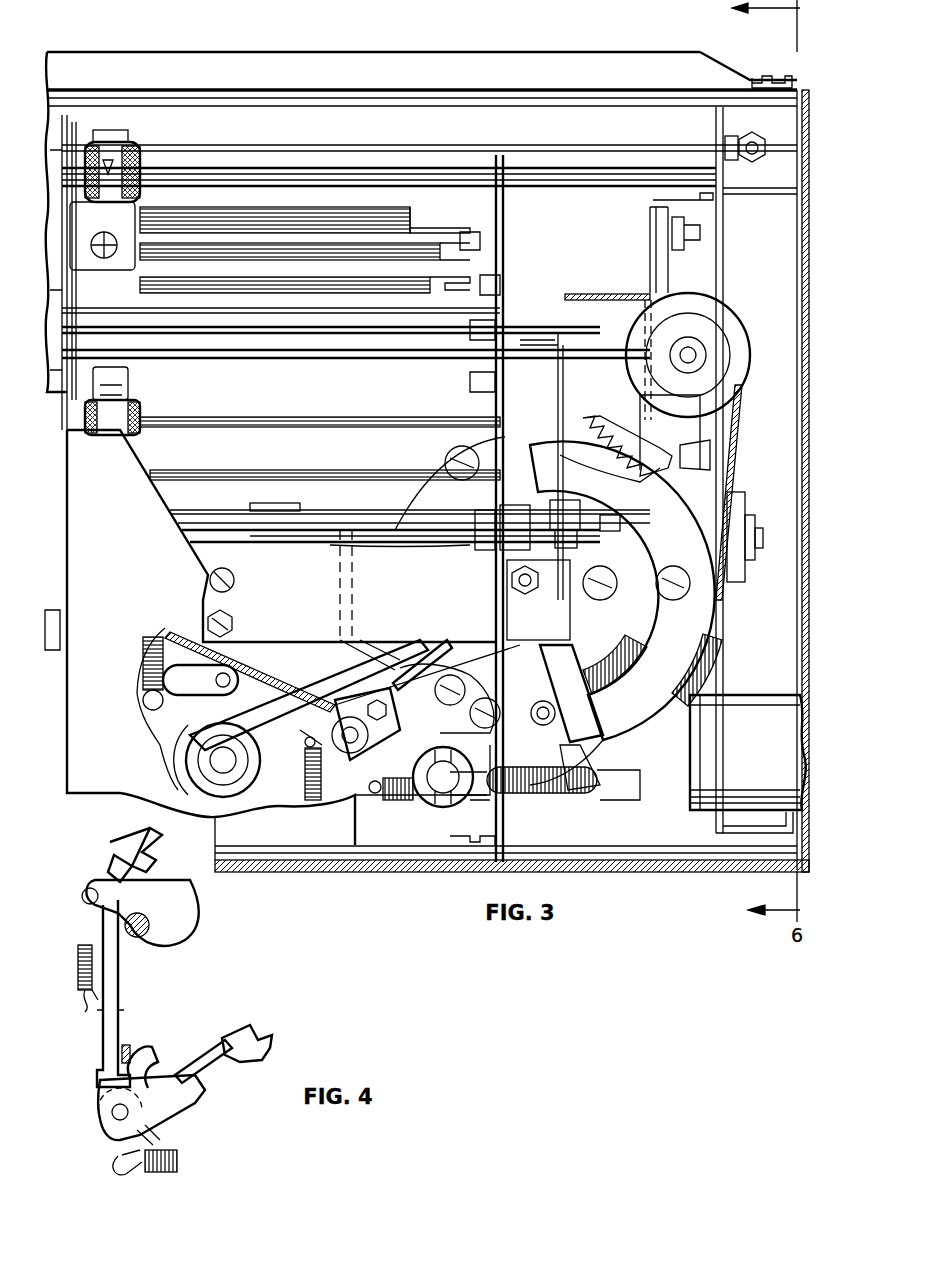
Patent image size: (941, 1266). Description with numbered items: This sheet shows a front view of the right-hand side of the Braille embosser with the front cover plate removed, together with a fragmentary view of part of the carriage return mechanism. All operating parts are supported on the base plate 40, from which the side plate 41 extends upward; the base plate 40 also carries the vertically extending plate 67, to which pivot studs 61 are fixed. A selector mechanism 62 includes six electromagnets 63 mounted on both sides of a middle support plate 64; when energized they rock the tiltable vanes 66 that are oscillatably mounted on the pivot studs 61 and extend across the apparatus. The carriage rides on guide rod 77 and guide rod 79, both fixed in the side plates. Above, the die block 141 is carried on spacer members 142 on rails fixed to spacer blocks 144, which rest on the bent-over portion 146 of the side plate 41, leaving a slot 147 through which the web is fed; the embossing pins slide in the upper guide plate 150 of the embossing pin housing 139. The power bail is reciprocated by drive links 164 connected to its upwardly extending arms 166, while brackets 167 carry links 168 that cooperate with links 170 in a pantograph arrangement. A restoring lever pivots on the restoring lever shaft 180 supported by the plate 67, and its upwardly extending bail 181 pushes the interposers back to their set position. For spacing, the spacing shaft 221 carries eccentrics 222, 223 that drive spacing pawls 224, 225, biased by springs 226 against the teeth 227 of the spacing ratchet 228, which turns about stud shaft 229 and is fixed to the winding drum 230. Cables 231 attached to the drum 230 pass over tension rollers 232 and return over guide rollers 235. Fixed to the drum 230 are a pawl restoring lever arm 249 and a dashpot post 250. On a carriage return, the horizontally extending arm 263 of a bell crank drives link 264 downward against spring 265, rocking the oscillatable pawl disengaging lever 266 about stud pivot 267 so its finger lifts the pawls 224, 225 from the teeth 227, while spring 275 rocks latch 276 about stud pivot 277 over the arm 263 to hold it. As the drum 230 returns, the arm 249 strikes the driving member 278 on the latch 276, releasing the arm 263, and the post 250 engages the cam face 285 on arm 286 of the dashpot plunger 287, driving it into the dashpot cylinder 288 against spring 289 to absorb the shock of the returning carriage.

In FIG. 3, the base plate 40 is at (445, 846).
In FIG. 3, the side plate 41 is at (726, 657).
In FIG. 3, the pivot studs 61 is at (466, 246).
In FIG. 3, the selector mechanism 62 is at (110, 347).
In FIG. 3, the electromagnets 63 is at (136, 145).
In FIG. 3, the middle support plate 64 is at (138, 468).
In FIG. 3, the tiltable vanes 66 is at (405, 232).
In FIG. 3, the vertically extending plate 67 is at (503, 208).
In FIG. 3, the guide rod 77 is at (589, 150).
In FIG. 3, the guide rod 79 is at (563, 298).
In FIG. 3, the embossing pin housing 139 is at (198, 106).
In FIG. 3, the die block 141 is at (425, 52).
In FIG. 3, the spacer members 142 is at (645, 90).
In FIG. 3, the spacer blocks 144 is at (790, 108).
In FIG. 3, the bent-over portion 146 is at (781, 190).
In FIG. 3, the slot 147 is at (356, 95).
In FIG. 3, the upper guide plate 150 is at (270, 100).
In FIG. 3, the drive links 164 is at (660, 266).
In FIG. 3, the upwardly extending arms 166 is at (660, 262).
In FIG. 3, the brackets 167 is at (626, 420).
In FIG. 3, the links 168 is at (702, 476).
In FIG. 3, the links 170 is at (694, 238).
In FIG. 3, the restoring lever shaft 180 is at (225, 522).
In FIG. 3, the upwardly extending bail 181 is at (563, 478).
In FIG. 3, the spacing shaft 221 is at (226, 752).
In FIG. 3, the eccentric 222 is at (232, 796).
In FIG. 3, the eccentric 223 is at (182, 755).
In FIG. 3, the spacing pawl 224 is at (190, 772).
In FIG. 4, the spacing pawl 224 is at (111, 864).
In FIG. 3, the spacing pawl 225 is at (182, 734).
In FIG. 4, the spacing pawl 225 is at (126, 842).
In FIG. 3, the springs 226 is at (313, 788).
In FIG. 3, the teeth 227 is at (652, 472).
In FIG. 3, the spacing ratchet 228 is at (690, 524).
In FIG. 3, the stud shaft 229 is at (518, 582).
In FIG. 3, the winding drum 230 is at (700, 650).
In FIG. 3, the cables 231 is at (624, 298).
In FIG. 3, the tension rollers 232 is at (170, 638).
In FIG. 3, the guide rollers 235 is at (735, 322).
In FIG. 3, the pawl restoring lever arm 249 is at (420, 648).
In FIG. 4, the pawl restoring lever arm 249 is at (220, 1032).
In FIG. 3, the dashpot post 250 is at (546, 718).
In FIG. 4, the horizontally extending arm 263 is at (133, 1046).
In FIG. 4, the link 264 is at (118, 974).
In FIG. 4, the spring 265 is at (80, 955).
In FIG. 4, the oscillatable pawl disengaging lever 266 is at (190, 894).
In FIG. 4, the stud pivot 267 is at (152, 934).
In FIG. 3, the spring 275 is at (402, 805).
In FIG. 4, the spring 275 is at (172, 1152).
In FIG. 4, the latch 276 is at (151, 1050).
In FIG. 3, the stud pivot 277 is at (308, 767).
In FIG. 4, the stud pivot 277 is at (112, 1116).
In FIG. 3, the driving member 278 is at (381, 736).
In FIG. 4, the driving member 278 is at (198, 1090).
In FIG. 3, the cam face 285 is at (521, 652).
In FIG. 3, the arm 286 is at (592, 708).
In FIG. 3, the dashpot plunger 287 is at (632, 790).
In FIG. 3, the dashpot cylinder 288 is at (783, 705).
In FIG. 3, the spring 289 is at (632, 802).